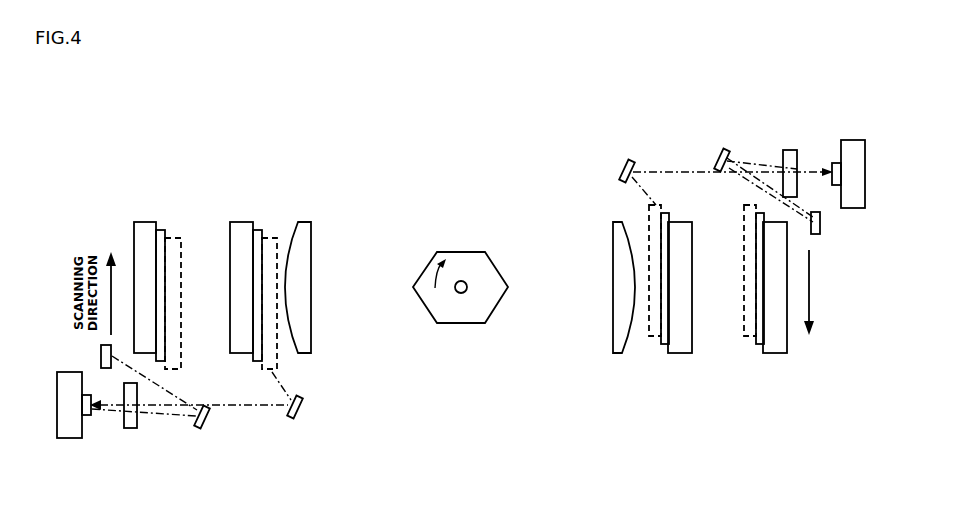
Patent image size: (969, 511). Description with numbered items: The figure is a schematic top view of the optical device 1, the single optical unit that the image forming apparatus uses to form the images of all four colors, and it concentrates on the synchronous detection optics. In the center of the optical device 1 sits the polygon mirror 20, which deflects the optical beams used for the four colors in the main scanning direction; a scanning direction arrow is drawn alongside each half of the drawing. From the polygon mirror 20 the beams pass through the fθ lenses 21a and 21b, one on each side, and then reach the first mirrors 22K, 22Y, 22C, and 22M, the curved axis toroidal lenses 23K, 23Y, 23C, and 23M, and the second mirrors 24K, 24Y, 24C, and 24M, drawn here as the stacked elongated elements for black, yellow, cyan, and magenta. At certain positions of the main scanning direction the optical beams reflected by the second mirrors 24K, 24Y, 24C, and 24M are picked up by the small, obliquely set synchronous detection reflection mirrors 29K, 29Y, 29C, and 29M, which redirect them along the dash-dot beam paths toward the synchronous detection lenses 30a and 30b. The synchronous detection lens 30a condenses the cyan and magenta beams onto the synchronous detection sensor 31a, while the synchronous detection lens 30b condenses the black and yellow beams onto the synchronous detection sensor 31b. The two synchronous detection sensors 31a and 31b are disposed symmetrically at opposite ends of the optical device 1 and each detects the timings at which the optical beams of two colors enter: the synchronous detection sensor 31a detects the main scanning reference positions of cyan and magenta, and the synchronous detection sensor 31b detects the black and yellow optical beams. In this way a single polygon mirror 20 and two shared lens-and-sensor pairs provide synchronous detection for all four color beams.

The optical device 1 is at (566, 101).
The polygon mirror 20 is at (448, 324).
The fθ lens 21a is at (615, 353).
The fθ lens 21b is at (304, 222).
The first mirror 22K is at (146, 222).
The first mirror 22Y is at (242, 222).
The first mirror 22C is at (687, 353).
The first mirror 22M is at (782, 353).
The curved axis toroidal lens 23K is at (160, 229).
The curved axis toroidal lens 23Y is at (256, 230).
The curved axis toroidal lens 23C is at (665, 348).
The curved axis toroidal lens 23M is at (757, 348).
The second mirror 24K is at (182, 242).
The second mirror 24Y is at (275, 364).
The second mirror 24C is at (648, 214).
The second mirror 24M is at (744, 218).
The synchronous detection reflection mirror 29K is at (208, 418).
The synchronous detection reflection mirror 29Y is at (302, 409).
The synchronous detection reflection mirror 29C is at (632, 162).
The synchronous detection reflection mirror 29M is at (727, 148).
The synchronous detection lens 30a is at (790, 150).
The synchronous detection lens 30b is at (128, 429).
The synchronous detection sensor 31a is at (850, 140).
The synchronous detection sensor 31b is at (65, 441).